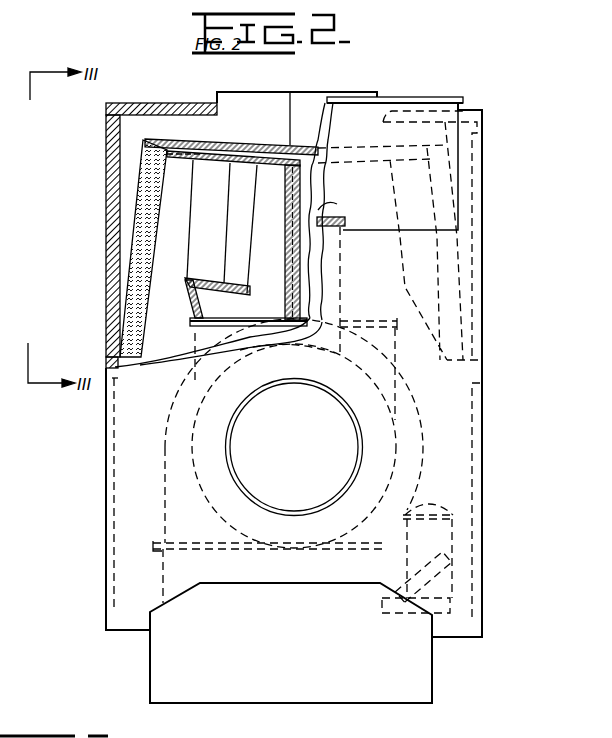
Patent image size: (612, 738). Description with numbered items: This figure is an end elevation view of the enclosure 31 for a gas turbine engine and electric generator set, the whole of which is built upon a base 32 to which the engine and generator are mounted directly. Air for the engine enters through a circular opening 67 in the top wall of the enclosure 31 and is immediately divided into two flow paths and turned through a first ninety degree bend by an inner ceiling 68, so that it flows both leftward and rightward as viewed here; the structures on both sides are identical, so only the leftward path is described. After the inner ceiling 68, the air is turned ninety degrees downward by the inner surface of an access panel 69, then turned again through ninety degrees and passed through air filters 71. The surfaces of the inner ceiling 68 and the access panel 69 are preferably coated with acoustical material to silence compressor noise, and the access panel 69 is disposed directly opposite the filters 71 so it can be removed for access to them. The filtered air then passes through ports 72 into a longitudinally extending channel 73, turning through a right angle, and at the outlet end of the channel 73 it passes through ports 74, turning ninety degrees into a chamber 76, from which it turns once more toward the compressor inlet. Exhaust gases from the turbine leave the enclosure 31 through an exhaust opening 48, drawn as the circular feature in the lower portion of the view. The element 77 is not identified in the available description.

The enclosure 31 is at (490, 134).
The base 32 is at (422, 659).
The exhaust opening 48 is at (291, 380).
The circular opening 67 is at (217, 93).
The inner ceiling 68 is at (212, 143).
The access panel 69 is at (107, 153).
The air filter 71 is at (133, 237).
The port 72 is at (190, 253).
The longitudinally extending channel 73 is at (222, 204).
The port 74 is at (227, 232).
The chamber 76 is at (277, 275).
The baffle plate 77 is at (200, 335).